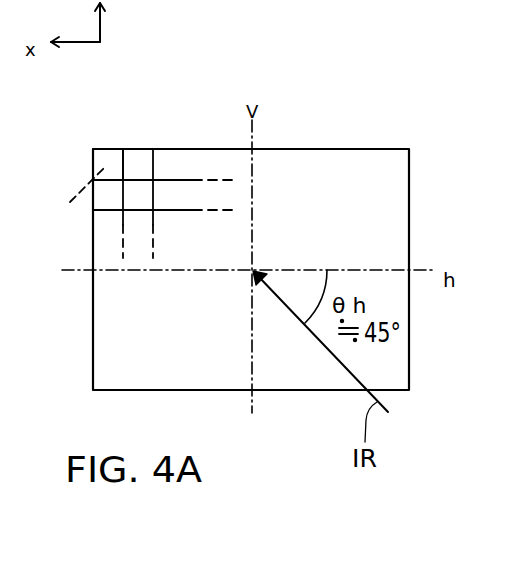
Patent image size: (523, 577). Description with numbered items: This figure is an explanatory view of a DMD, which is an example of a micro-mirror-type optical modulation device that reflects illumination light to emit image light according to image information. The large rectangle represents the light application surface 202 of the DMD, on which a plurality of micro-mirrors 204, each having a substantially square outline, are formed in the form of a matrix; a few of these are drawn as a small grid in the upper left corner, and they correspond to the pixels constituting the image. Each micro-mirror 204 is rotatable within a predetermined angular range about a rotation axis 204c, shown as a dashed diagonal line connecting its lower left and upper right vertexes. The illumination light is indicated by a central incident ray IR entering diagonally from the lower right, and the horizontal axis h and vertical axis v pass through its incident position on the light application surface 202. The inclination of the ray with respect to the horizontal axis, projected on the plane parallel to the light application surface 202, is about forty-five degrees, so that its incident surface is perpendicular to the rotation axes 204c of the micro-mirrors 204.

The light application surface 202 is at (348, 163).
The micro-mirror 204 is at (116, 153).
The rotation axis 204c is at (128, 146).